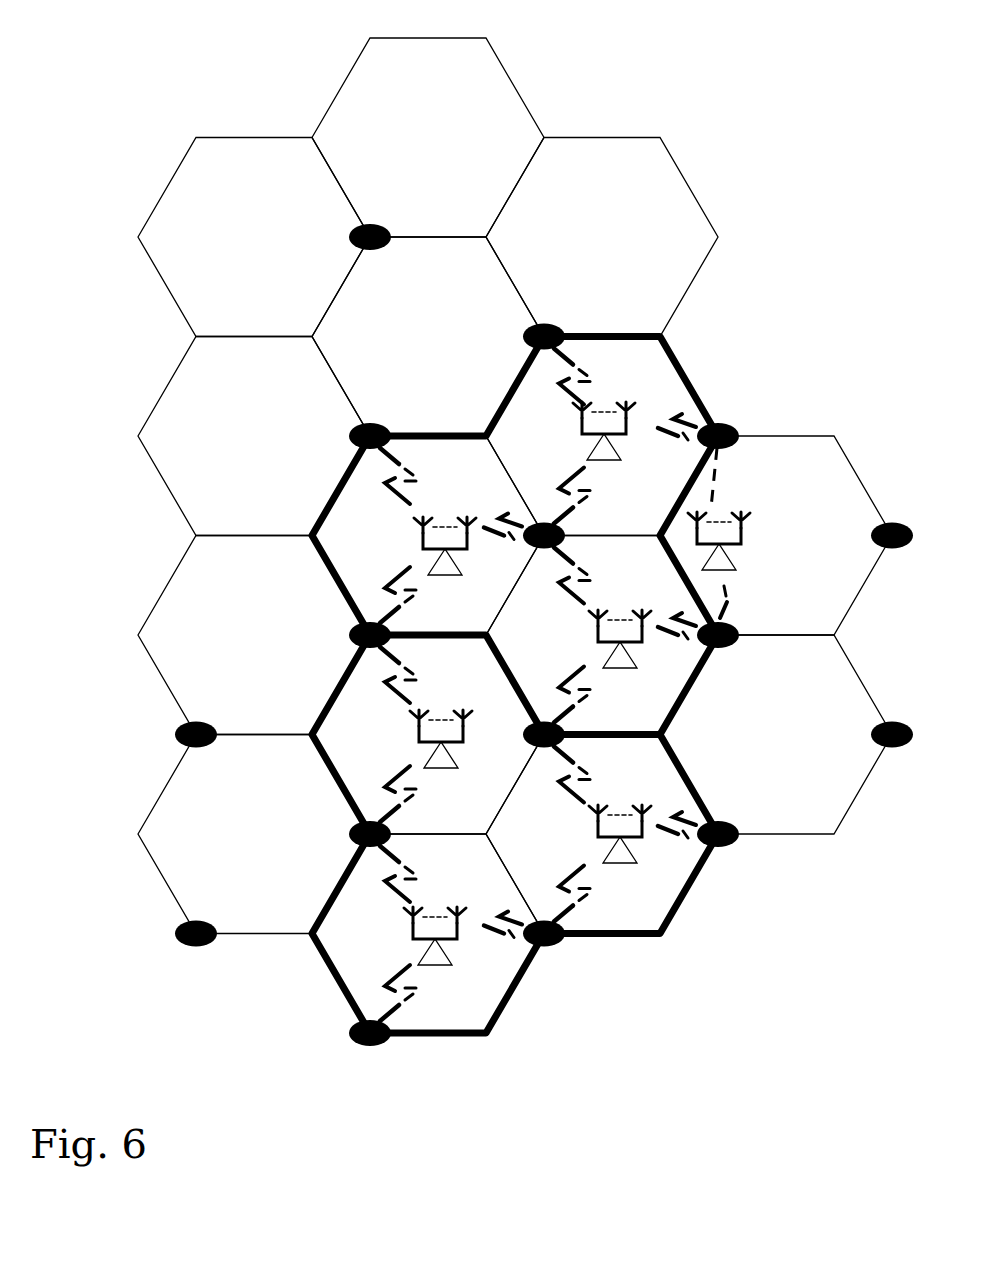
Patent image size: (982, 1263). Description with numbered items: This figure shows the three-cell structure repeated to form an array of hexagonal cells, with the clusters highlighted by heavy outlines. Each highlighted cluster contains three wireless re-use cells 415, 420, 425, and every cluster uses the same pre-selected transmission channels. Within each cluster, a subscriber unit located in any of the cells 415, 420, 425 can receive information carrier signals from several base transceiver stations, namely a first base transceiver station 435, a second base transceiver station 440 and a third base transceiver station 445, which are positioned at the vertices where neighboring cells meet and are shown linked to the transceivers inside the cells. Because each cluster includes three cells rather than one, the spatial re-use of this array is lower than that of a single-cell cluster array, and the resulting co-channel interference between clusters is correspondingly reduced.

The wireless re-use cell 415 is at (658, 364).
The wireless re-use cell 420 is at (650, 688).
The wireless re-use cell 425 is at (355, 517).
The first base transceiver station 435 is at (551, 320).
The second base transceiver station 440 is at (732, 421).
The third base transceiver station 445 is at (567, 532).